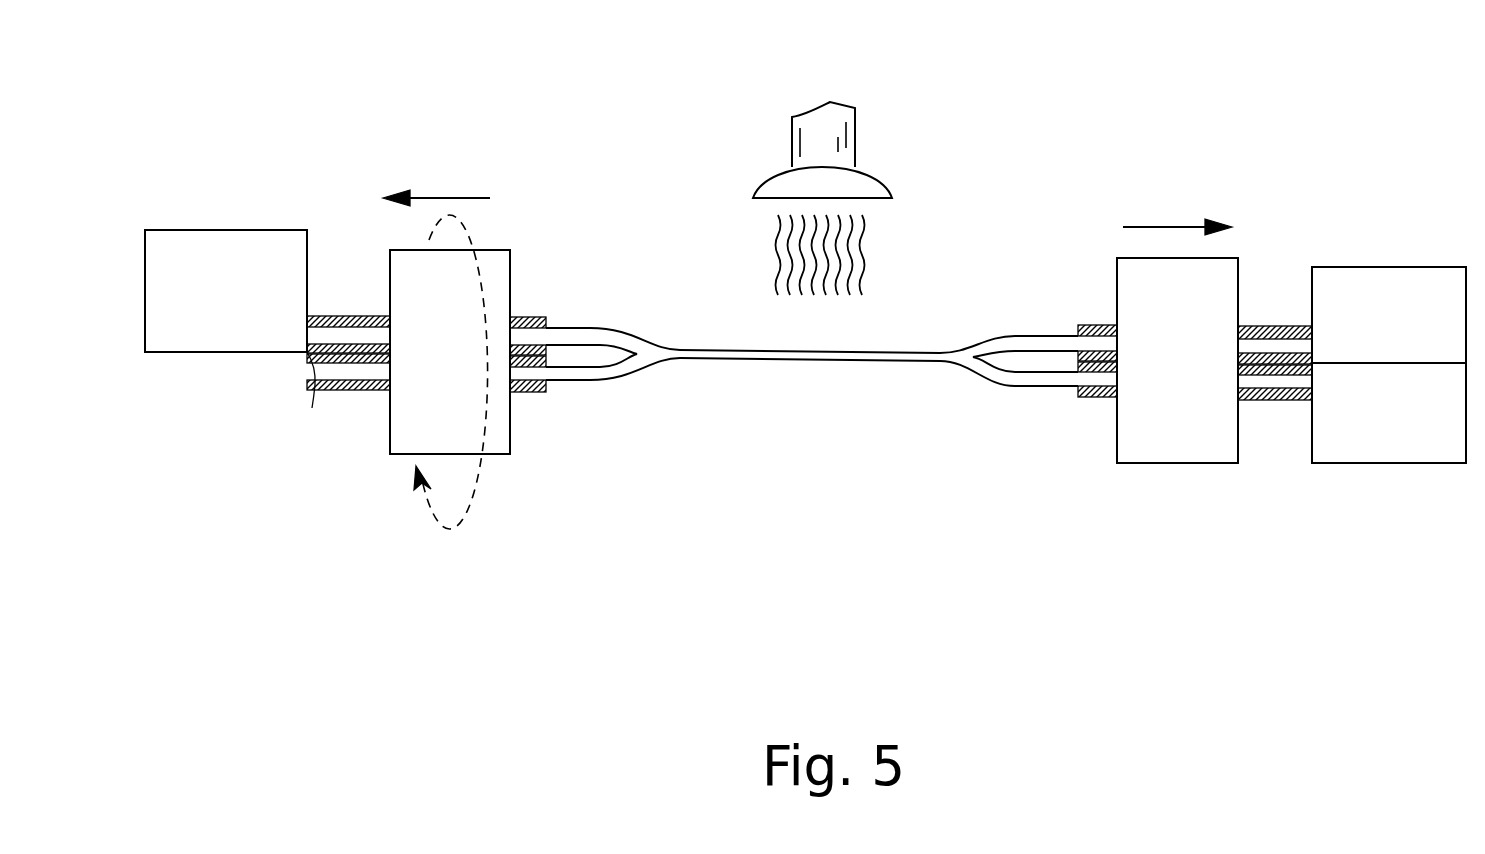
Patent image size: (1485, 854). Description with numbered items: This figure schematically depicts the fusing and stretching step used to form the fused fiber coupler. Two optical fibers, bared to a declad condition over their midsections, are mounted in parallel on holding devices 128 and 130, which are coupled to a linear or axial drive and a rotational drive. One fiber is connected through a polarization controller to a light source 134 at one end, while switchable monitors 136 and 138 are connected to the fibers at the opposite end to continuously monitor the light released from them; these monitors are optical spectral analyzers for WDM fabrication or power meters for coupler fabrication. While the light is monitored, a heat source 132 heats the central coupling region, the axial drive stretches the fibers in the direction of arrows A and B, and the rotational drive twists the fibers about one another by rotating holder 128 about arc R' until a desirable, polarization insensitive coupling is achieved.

The holding device 128 is at (420, 298).
The holding device 130 is at (1158, 313).
The heat source 132 is at (818, 105).
The light source 134 is at (203, 282).
The switchable monitor 136 is at (1366, 415).
The switchable monitor 138 is at (1366, 318).